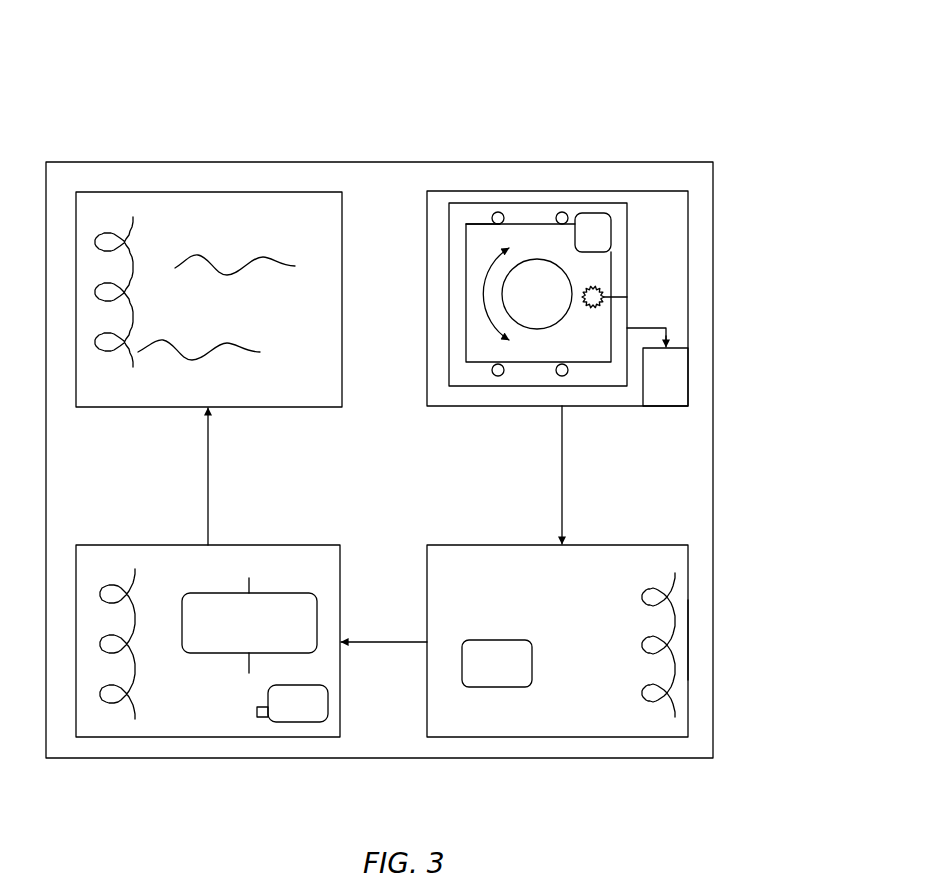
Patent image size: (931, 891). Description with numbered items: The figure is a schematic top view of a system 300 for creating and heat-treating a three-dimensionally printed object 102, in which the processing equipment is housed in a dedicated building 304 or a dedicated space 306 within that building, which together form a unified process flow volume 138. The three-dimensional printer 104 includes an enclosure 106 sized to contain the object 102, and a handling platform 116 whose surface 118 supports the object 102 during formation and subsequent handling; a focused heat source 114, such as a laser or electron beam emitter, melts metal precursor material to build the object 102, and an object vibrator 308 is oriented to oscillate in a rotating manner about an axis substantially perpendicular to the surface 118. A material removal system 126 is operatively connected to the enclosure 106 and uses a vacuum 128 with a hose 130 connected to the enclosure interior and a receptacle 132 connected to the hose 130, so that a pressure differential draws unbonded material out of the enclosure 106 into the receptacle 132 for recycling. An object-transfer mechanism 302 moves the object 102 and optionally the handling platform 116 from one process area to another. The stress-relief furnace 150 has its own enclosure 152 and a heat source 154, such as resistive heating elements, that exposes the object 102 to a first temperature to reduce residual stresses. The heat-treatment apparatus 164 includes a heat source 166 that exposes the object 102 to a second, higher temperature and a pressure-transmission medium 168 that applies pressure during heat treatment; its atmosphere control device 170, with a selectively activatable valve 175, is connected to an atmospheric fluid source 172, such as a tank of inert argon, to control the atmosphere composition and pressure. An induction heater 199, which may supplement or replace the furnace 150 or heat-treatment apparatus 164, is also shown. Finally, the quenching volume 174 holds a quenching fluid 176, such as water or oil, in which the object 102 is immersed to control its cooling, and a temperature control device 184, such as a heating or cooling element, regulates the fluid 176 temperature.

The system 300 is at (253, 88).
The dedicated building 304 is at (680, 162).
The unified process flow volume 138 is at (759, 479).
The dedicated space 306 is at (368, 477).
The quenching volume 174 is at (153, 180).
The temperature control device 184 is at (130, 230).
The quenching fluid 176 is at (209, 315).
The 3D printer 104 is at (562, 178).
The enclosure 106 is at (613, 203).
The surface 118 is at (563, 353).
The handling platform 116 is at (483, 224).
The object-transfer mechanism 302 is at (505, 384).
The 3D-printed object 102 is at (520, 304).
The object vibrator 308 is at (485, 283).
The focused heat source 114 is at (621, 290).
The material removal system 126 is at (773, 292).
The hose 130 is at (660, 323).
The vacuum 128 is at (672, 340).
The receptacle 132 is at (678, 372).
The heat-treatment apparatus 164 is at (163, 748).
The heat source 166 is at (136, 688).
The pressure-transmission medium 168 is at (232, 632).
The atmosphere control device 170 is at (315, 806).
The atmospheric fluid source 172 is at (298, 722).
The selectively activatable valve 175 is at (262, 718).
The stress-relief furnace 150 is at (607, 740).
The enclosure 152 is at (688, 640).
The heat source 154 is at (642, 594).
The induction heater 199 is at (478, 673).